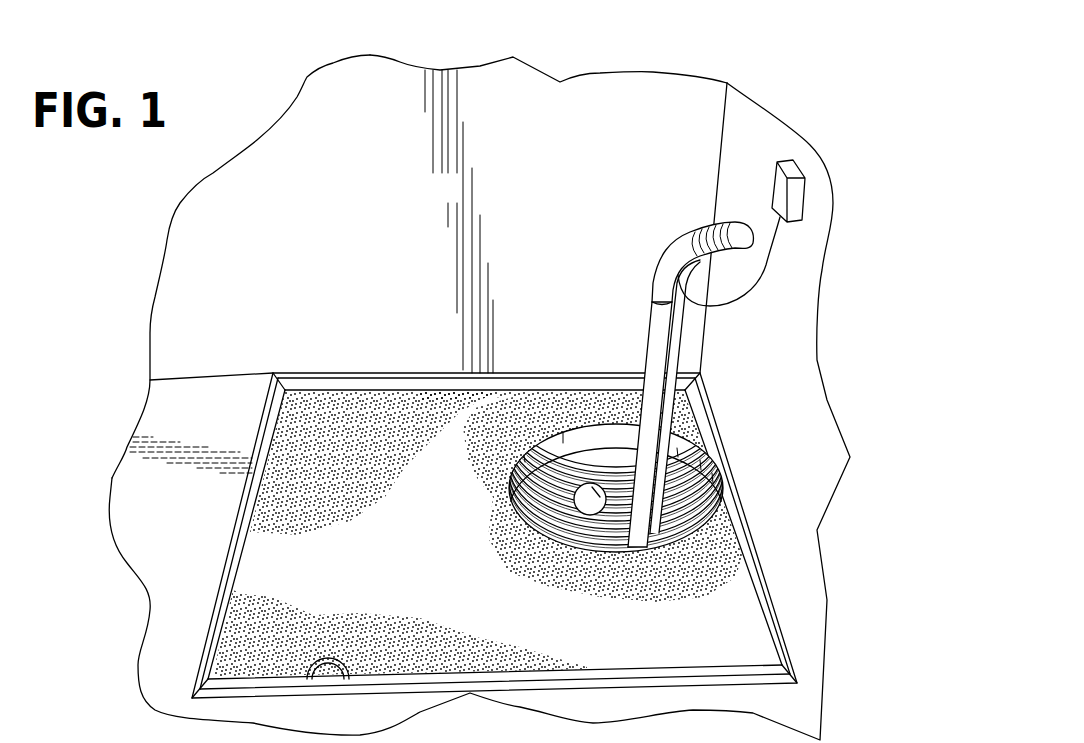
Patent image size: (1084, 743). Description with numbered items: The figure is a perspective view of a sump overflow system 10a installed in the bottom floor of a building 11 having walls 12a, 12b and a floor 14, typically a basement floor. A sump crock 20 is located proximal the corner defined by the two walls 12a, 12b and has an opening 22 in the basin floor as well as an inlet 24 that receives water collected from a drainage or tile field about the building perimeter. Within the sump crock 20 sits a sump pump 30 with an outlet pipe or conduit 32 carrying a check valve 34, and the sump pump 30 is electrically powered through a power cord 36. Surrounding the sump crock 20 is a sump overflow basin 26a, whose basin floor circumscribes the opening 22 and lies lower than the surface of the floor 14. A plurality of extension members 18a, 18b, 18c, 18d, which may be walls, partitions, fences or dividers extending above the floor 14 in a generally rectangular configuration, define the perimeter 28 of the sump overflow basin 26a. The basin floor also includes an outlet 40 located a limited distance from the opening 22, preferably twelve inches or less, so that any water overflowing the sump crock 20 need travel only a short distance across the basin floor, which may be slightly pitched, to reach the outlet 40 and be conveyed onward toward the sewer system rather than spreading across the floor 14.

The sump overflow system 10a is at (307, 287).
The building 11 is at (410, 47).
The wall 12a is at (460, 201).
The wall 12b is at (743, 166).
The floor 14 is at (180, 527).
The extension member 18a is at (263, 443).
The extension member 18b is at (420, 377).
The extension member 18c is at (750, 555).
The extension member 18d is at (498, 672).
The sump crock 20 is at (583, 445).
The opening 22 is at (510, 497).
The inlet 24 is at (527, 522).
The sump overflow basin 26a is at (364, 405).
The perimeter 28 is at (203, 597).
The sump pump 30 is at (632, 545).
The outlet pipe or conduit 32 is at (657, 352).
The check valve 34 is at (678, 348).
The power cord 36 is at (767, 270).
The outlet 40 is at (328, 658).